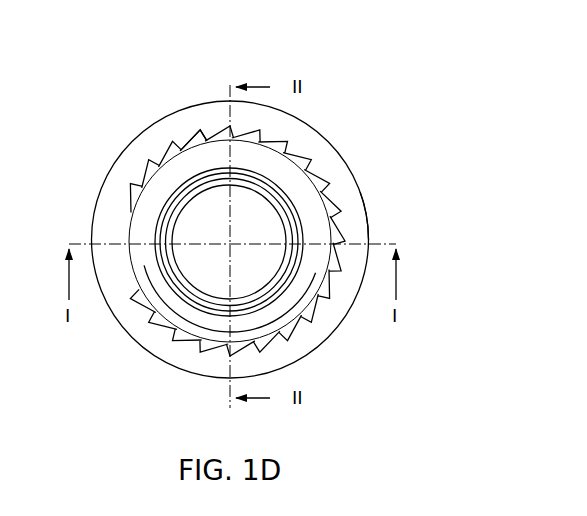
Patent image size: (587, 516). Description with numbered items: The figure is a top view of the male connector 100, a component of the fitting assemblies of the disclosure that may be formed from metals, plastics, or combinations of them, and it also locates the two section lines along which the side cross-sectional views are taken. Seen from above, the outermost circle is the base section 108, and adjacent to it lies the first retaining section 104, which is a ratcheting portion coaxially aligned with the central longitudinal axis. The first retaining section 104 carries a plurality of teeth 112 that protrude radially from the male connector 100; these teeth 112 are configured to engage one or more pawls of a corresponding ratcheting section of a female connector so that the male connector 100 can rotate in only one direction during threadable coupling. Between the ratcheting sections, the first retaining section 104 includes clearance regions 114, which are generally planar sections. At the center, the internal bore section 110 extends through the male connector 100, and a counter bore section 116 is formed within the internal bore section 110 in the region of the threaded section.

The male connector 100 is at (120, 72).
The first retaining section 104 is at (199, 130).
The base section 108 is at (308, 126).
The internal bore section 110 is at (260, 186).
The teeth 112 is at (320, 177).
The clearance regions 114 is at (346, 224).
The counter bore section 116 is at (200, 298).